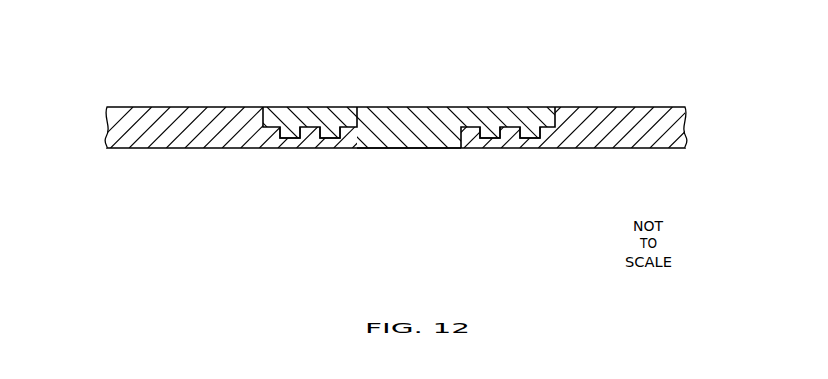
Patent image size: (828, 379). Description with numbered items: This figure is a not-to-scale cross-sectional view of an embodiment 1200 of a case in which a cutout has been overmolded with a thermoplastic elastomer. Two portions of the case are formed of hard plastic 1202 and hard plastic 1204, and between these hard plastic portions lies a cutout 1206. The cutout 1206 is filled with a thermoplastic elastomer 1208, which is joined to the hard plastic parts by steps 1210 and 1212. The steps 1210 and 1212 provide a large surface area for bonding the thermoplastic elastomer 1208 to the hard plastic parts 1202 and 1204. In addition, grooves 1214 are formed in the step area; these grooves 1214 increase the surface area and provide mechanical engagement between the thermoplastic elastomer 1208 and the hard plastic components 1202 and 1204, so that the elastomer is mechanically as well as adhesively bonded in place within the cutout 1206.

The embodiment 1200 is at (380, 173).
The hard plastic 1202 is at (128, 106).
The hard plastic 1204 is at (618, 107).
The cutout 1206 is at (424, 148).
The thermoplastic elastomer 1208 is at (358, 113).
The step 1210 is at (277, 126).
The step 1212 is at (508, 126).
The grooves 1214 is at (327, 138).